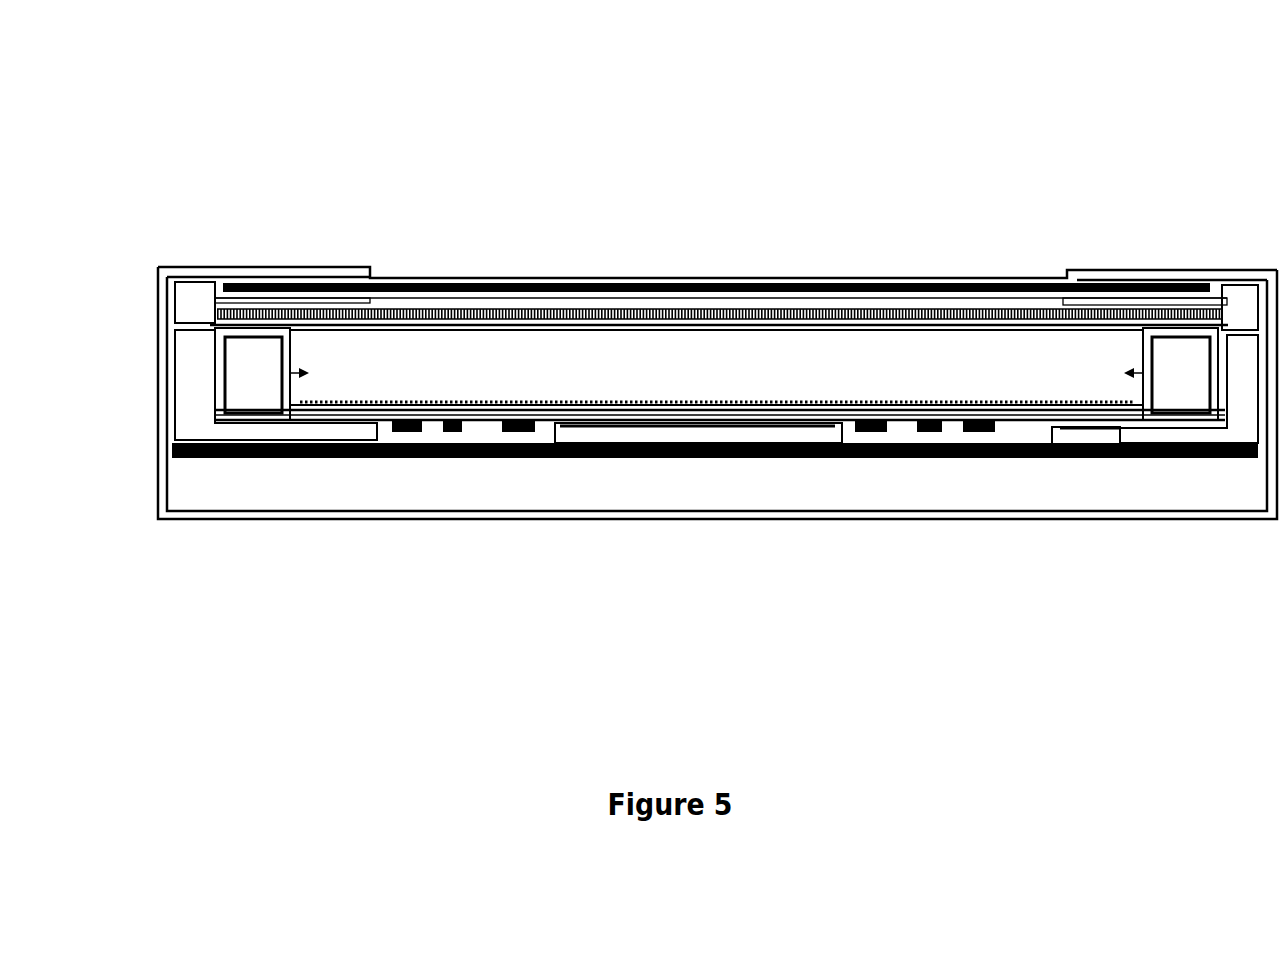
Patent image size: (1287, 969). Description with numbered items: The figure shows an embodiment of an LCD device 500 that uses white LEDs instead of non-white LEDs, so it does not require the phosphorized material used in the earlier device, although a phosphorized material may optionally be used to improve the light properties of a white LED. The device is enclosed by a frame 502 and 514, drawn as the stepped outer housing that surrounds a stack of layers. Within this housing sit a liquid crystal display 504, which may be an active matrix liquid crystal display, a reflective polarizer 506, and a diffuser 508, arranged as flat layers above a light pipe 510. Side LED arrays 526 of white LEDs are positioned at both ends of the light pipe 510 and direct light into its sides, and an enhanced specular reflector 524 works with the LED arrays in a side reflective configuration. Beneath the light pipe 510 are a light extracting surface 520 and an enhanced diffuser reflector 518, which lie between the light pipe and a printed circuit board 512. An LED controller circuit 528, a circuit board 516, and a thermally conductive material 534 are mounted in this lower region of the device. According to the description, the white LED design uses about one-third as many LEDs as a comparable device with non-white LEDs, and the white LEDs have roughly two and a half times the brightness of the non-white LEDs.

The LCD device 500 is at (1195, 83).
The frame 502 is at (717, 201).
The liquid crystal display 504 is at (721, 221).
The reflective polarizer 506 is at (720, 237).
The diffuser 508 is at (719, 245).
The light pipe 510 is at (716, 290).
The printed circuit board 512 is at (683, 462).
The frame 514 is at (715, 549).
The circuit board 516 is at (646, 525).
The enhanced diffuser reflector 518 is at (720, 519).
The light extracting surface 520 is at (716, 509).
The enhanced specular reflector 524 is at (1182, 295).
The side LED arrays 526 is at (229, 474).
The LED controller circuit 528 is at (674, 535).
The thermally conductive material 534 is at (1060, 533).